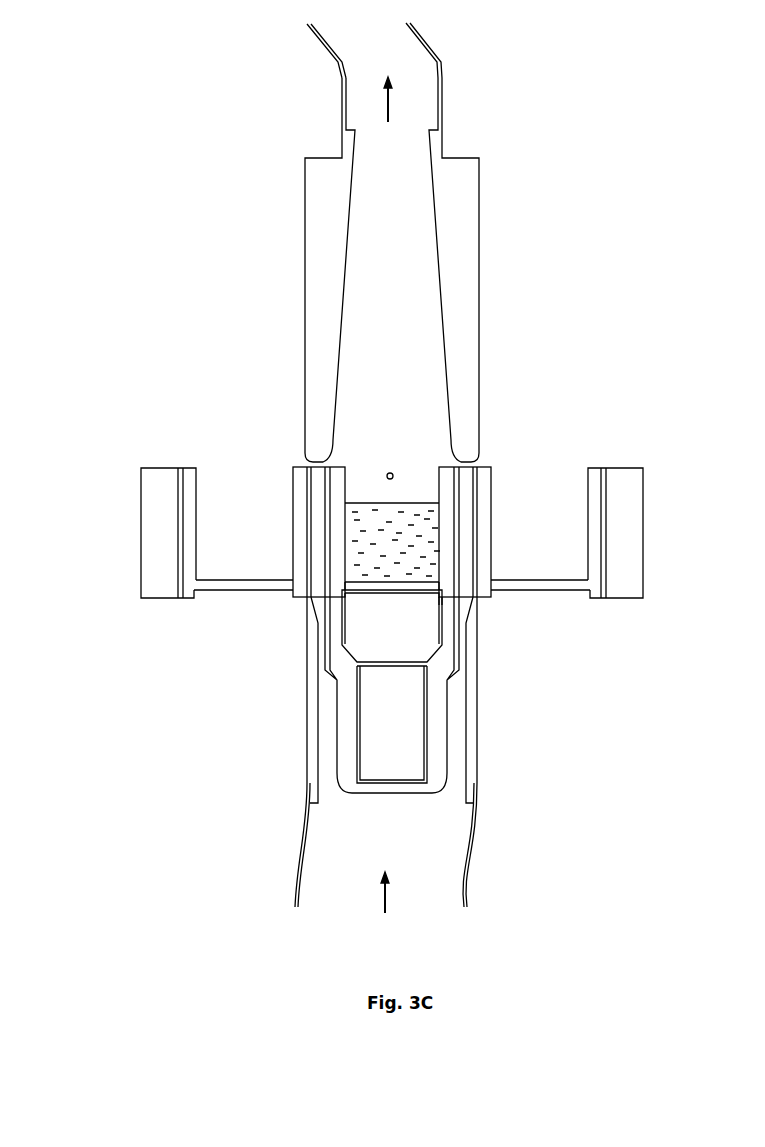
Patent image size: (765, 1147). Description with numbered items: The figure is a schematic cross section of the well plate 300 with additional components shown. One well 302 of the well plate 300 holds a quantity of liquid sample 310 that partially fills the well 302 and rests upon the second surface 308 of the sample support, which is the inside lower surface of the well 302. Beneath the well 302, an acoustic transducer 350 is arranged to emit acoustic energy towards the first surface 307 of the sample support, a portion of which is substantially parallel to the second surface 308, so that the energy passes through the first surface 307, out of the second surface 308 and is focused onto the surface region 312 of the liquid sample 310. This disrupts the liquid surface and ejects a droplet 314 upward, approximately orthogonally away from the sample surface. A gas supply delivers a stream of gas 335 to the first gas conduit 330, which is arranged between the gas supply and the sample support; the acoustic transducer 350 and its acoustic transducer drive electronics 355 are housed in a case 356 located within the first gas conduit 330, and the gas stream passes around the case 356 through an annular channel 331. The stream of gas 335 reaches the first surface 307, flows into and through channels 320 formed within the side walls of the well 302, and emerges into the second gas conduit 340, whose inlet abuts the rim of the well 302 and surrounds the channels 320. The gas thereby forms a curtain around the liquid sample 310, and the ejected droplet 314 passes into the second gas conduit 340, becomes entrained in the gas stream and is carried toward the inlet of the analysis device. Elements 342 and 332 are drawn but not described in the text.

The well plate 300 is at (126, 448).
The second gas conduit 340 is at (318, 207).
The tube neck 342 is at (307, 461).
The stream of gas 335 is at (393, 108).
The channels 320 is at (330, 534).
The surface region 312 is at (393, 503).
The liquid sample 310 is at (418, 530).
The second surface 308 is at (420, 578).
The droplet 314 is at (382, 470).
The first surface 307 is at (450, 603).
The acoustic transducer 350 is at (430, 640).
The acoustic transducer drive electronics 355 is at (413, 723).
The annular channel 331 is at (330, 748).
The case 356 is at (440, 790).
The left connector 332 is at (315, 598).
The well 302 is at (445, 585).
The first gas conduit 330 is at (310, 675).